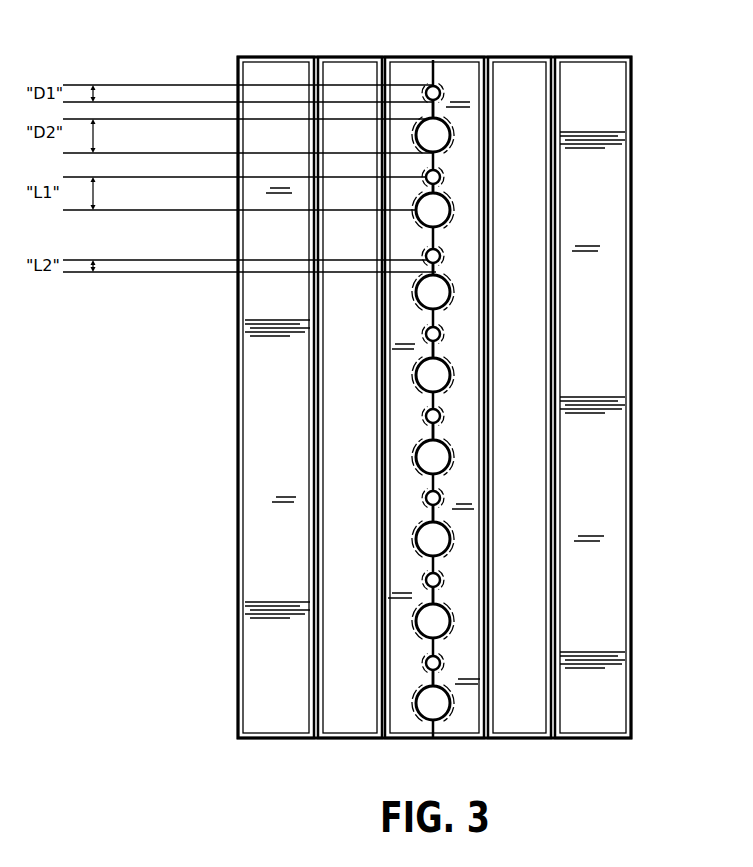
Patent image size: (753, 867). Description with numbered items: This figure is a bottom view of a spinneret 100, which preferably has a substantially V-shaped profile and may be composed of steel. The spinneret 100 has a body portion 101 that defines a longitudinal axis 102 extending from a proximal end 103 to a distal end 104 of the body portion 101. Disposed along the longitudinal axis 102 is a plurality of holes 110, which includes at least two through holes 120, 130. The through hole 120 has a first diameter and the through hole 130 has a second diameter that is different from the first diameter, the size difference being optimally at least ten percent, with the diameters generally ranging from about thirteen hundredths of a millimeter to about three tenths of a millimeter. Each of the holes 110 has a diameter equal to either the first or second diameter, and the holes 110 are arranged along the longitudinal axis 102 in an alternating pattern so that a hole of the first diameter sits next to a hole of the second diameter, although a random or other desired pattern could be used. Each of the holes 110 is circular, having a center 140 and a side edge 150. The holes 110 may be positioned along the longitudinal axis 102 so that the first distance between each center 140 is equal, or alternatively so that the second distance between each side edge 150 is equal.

The spinneret 100 is at (643, 53).
The body portion 101 is at (640, 115).
The longitudinal axis 102 is at (435, 70).
The proximal end 103 is at (337, 740).
The distal end 104 is at (352, 57).
The holes 110 is at (460, 725).
The through hole 120 is at (446, 93).
The through hole 130 is at (455, 135).
The center 140 is at (436, 210).
The side edge 150 is at (435, 274).